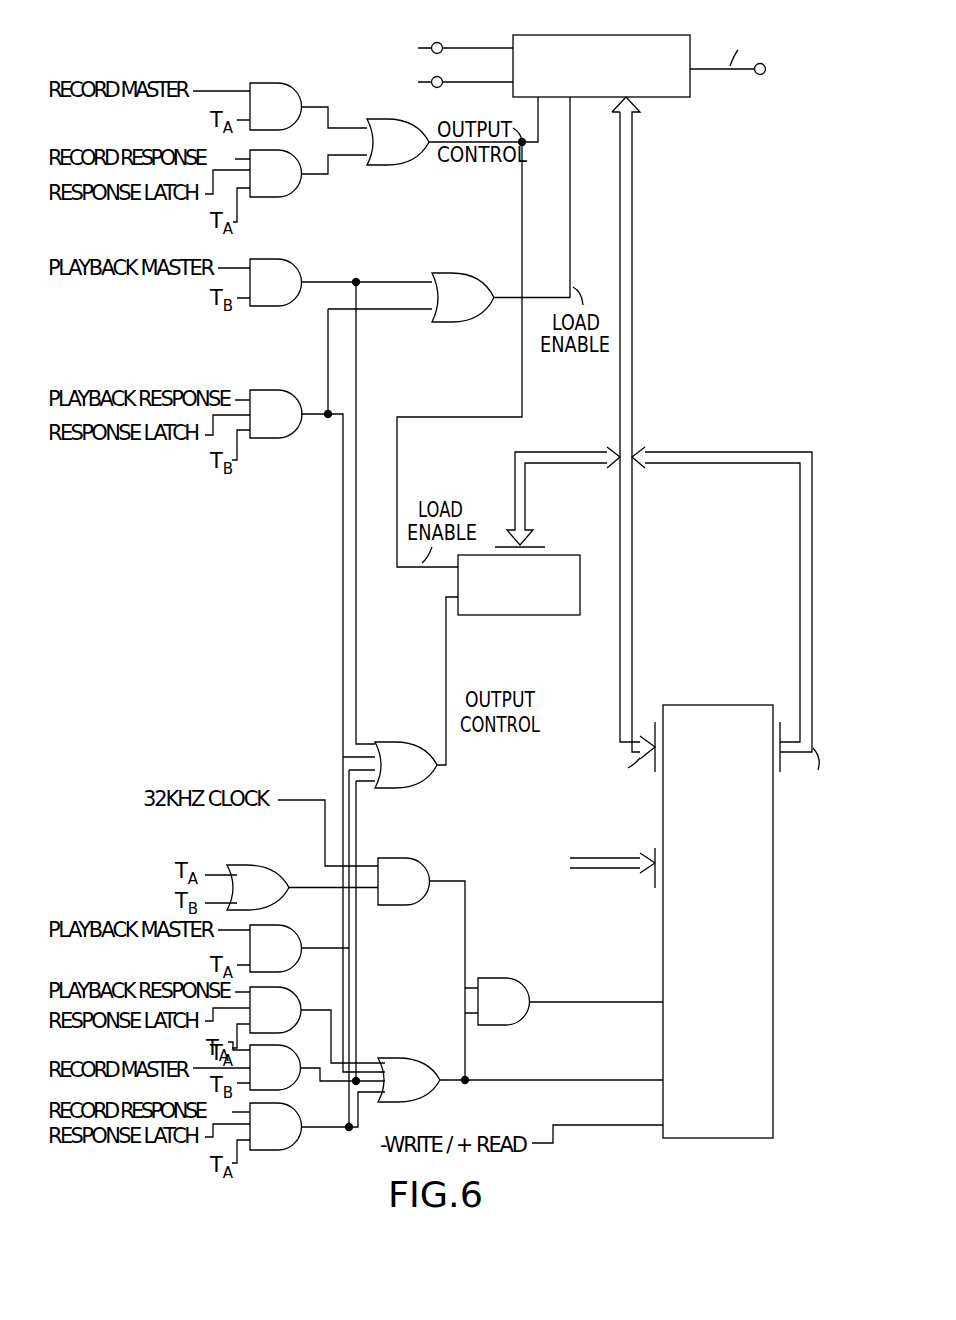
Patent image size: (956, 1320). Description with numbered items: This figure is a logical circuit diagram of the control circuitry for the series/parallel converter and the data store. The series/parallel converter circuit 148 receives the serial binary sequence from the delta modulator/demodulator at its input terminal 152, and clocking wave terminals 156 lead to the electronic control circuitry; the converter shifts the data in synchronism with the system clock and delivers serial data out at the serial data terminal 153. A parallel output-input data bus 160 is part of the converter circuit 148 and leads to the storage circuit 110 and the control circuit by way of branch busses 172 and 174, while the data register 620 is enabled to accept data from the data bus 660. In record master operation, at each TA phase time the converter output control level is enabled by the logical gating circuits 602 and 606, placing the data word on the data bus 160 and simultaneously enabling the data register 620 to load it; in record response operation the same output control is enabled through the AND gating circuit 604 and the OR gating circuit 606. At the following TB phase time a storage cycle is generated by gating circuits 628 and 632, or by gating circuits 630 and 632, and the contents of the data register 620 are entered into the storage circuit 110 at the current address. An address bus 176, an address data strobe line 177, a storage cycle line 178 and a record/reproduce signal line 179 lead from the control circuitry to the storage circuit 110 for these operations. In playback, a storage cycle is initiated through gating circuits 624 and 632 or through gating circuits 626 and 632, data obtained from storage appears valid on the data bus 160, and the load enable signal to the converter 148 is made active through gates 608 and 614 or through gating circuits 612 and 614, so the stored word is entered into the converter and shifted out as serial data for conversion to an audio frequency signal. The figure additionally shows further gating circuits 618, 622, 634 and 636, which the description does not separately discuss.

The logical gating circuit 602 is at (278, 92).
The AND gating circuit 604 is at (282, 197).
The OR gating circuit 606 is at (387, 162).
The gate 608 is at (310, 250).
The logical gating circuit 612 is at (280, 400).
The gate 614 is at (482, 288).
The OR gate (output control of data register) 618 is at (425, 733).
The data register 620 is at (493, 615).
The OR gate (TA / TB) 622 is at (282, 858).
The logical gating circuit 624 is at (295, 943).
The gating circuit 626 is at (295, 1005).
The logical gating circuit 628 is at (292, 1070).
The logical gating circuit 630 is at (297, 1122).
The logical gating circuit 632 is at (430, 1055).
The AND gate (clock gating) 634 is at (430, 845).
The AND gate (address/data strobe) 636 is at (522, 970).
The series/parallel converter circuit 148 is at (553, 33).
The output terminals 152 is at (446, 50).
The clocking wave terminals 156 is at (446, 83).
The serial data terminal 153 is at (775, 66).
The parallel output-input bus 160 is at (628, 200).
The data bus 660 is at (563, 458).
The branch bus 174 is at (800, 568).
The branch bus 172 is at (642, 740).
The storage circuit 110 is at (725, 710).
The address bus 176 is at (585, 878).
The address data strobe line 177 is at (657, 1018).
The storage cycle line 178 is at (622, 1066).
The record/reproduce signal line 179 is at (626, 1126).